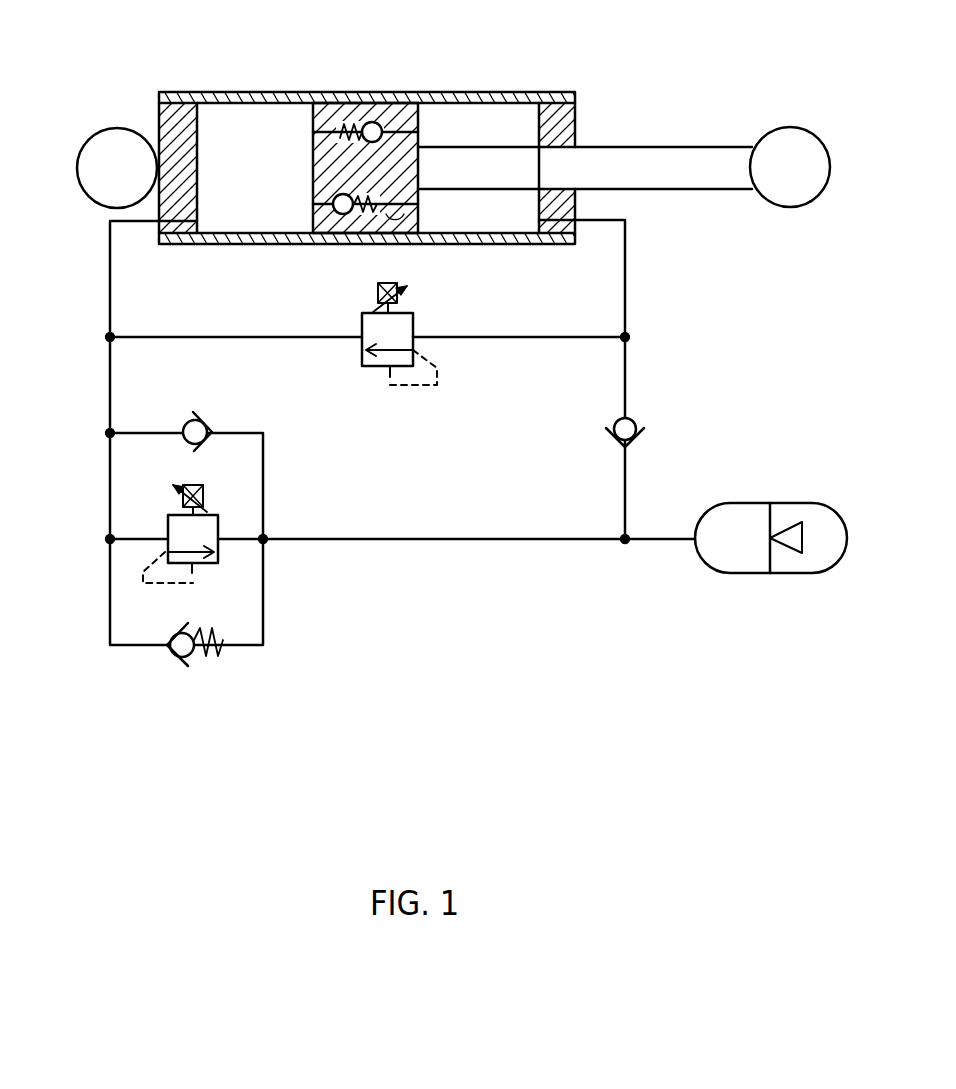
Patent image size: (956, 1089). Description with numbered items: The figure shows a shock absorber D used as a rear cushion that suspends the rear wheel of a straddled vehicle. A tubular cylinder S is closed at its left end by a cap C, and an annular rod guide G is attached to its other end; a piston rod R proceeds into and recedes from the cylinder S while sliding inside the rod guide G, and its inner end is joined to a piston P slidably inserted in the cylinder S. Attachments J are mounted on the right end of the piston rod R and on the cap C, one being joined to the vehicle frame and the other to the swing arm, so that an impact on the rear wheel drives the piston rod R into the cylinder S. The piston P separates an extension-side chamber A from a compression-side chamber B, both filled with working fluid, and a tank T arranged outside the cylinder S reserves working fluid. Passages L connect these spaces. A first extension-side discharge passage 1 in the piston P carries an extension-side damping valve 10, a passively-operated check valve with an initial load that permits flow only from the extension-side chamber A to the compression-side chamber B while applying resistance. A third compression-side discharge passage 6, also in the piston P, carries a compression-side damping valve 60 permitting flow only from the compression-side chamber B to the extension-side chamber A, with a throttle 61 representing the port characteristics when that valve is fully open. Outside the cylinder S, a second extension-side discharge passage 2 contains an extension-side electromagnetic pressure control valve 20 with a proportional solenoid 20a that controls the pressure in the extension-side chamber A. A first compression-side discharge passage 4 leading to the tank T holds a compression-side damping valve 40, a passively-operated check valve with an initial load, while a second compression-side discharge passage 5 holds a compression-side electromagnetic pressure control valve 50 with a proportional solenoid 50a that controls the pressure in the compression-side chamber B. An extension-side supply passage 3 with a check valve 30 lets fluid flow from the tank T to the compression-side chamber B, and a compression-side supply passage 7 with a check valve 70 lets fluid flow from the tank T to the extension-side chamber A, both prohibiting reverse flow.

The shock absorber D is at (737, 70).
The cylinder S is at (526, 92).
The cap C is at (163, 115).
The rod guide G is at (578, 118).
The piston P is at (350, 97).
The piston rod R is at (657, 158).
The attachment J is at (112, 127).
The extension-side chamber A is at (495, 222).
The compression-side chamber B is at (238, 222).
The first extension-side discharge passage 1 is at (310, 147).
The third compression-side discharge passage 6 is at (310, 186).
The extension-side damping valve 10 is at (387, 123).
The compression-side damping valve 60 is at (313, 234).
The throttle 61 is at (401, 229).
The second extension-side discharge passage 2 is at (498, 340).
The extension-side electromagnetic pressure control valve 20 is at (345, 357).
The proportional solenoid 20a is at (378, 287).
The extension-side supply passage 3 is at (256, 432).
The check valve 30 is at (183, 422).
The second compression-side discharge passage 5 is at (133, 542).
The compression-side electromagnetic pressure control valve 50 is at (142, 515).
The proportional solenoid 50a is at (190, 485).
The first compression-side discharge passage 4 is at (130, 648).
The compression-side damping valve 40 is at (190, 658).
The compression-side supply passage 7 is at (625, 400).
The check valve 70 is at (612, 440).
The passages L is at (393, 555).
The tank T is at (800, 503).